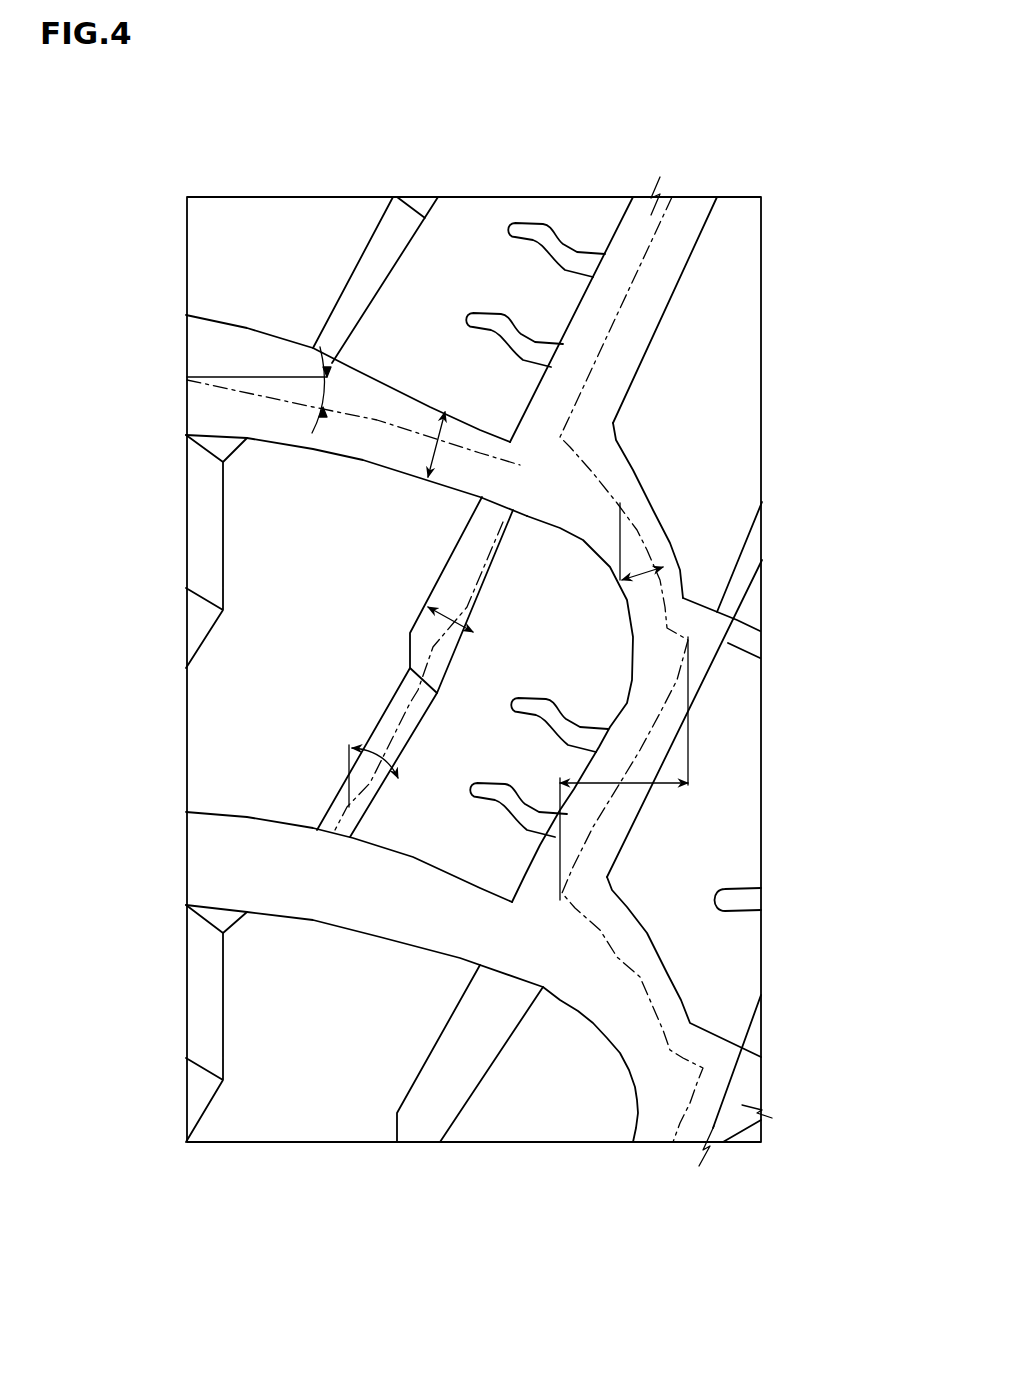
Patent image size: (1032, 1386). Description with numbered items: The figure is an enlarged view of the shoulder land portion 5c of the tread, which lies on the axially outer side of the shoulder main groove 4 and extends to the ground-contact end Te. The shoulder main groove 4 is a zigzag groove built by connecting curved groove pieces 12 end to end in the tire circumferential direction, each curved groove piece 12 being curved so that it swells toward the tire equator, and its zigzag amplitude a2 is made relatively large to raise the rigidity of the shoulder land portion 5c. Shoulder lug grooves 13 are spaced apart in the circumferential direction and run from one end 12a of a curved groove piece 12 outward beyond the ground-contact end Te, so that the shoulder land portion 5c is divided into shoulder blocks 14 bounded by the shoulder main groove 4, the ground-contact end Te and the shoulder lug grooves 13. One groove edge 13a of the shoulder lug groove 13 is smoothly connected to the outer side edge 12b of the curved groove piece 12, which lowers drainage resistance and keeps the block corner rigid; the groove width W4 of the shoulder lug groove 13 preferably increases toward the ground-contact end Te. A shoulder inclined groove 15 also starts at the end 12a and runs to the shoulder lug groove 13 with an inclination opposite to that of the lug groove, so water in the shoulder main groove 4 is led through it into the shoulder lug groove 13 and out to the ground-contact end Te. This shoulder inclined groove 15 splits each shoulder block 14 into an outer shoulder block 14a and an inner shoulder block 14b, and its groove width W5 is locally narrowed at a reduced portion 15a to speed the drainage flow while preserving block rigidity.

The ground-contact end Te is at (185, 235).
The shoulder main groove 4 is at (686, 188).
The shoulder land portion 5c is at (420, 188).
The curved groove piece 12 is at (477, 618).
The end of the curved groove piece 12a is at (523, 472).
The outer side edge of the curved groove piece 12b is at (620, 562).
The shoulder lug groove 13 is at (309, 608).
The groove edge of the shoulder lug groove 13a is at (357, 460).
The shoulder block 14 is at (473, 747).
The outer shoulder block 14a is at (253, 773).
The inner shoulder block 14b is at (448, 828).
The shoulder inclined groove 15 is at (302, 667).
The reduced portion 15a is at (425, 648).
The groove width of the shoulder lug groove W4 is at (422, 441).
The groove width of the shoulder inclined groove W5 is at (428, 630).
The zigzag amplitude of the curved groove piece a2 is at (633, 783).